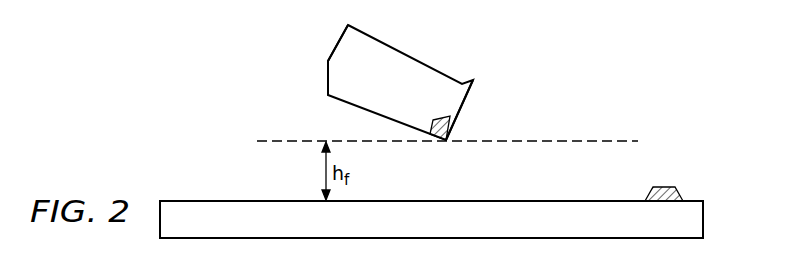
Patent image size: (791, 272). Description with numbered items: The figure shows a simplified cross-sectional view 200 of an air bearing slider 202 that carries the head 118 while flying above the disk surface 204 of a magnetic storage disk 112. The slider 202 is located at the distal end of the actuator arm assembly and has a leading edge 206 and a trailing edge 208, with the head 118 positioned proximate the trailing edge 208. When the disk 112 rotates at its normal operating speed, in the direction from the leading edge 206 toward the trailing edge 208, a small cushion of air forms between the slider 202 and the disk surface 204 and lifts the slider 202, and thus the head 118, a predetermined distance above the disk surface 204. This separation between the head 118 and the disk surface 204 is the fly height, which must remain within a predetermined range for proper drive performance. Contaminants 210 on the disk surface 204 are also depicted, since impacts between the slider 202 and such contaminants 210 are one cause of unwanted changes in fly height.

The cross-sectional view 200 is at (603, 64).
The air bearing slider 202 is at (403, 60).
The leading edge 206 is at (338, 42).
The trailing edge 208 is at (466, 104).
The head 118 is at (437, 139).
The magnetic storage disk 112 is at (220, 207).
The disk surface 204 is at (537, 200).
The contaminants 210 is at (665, 188).